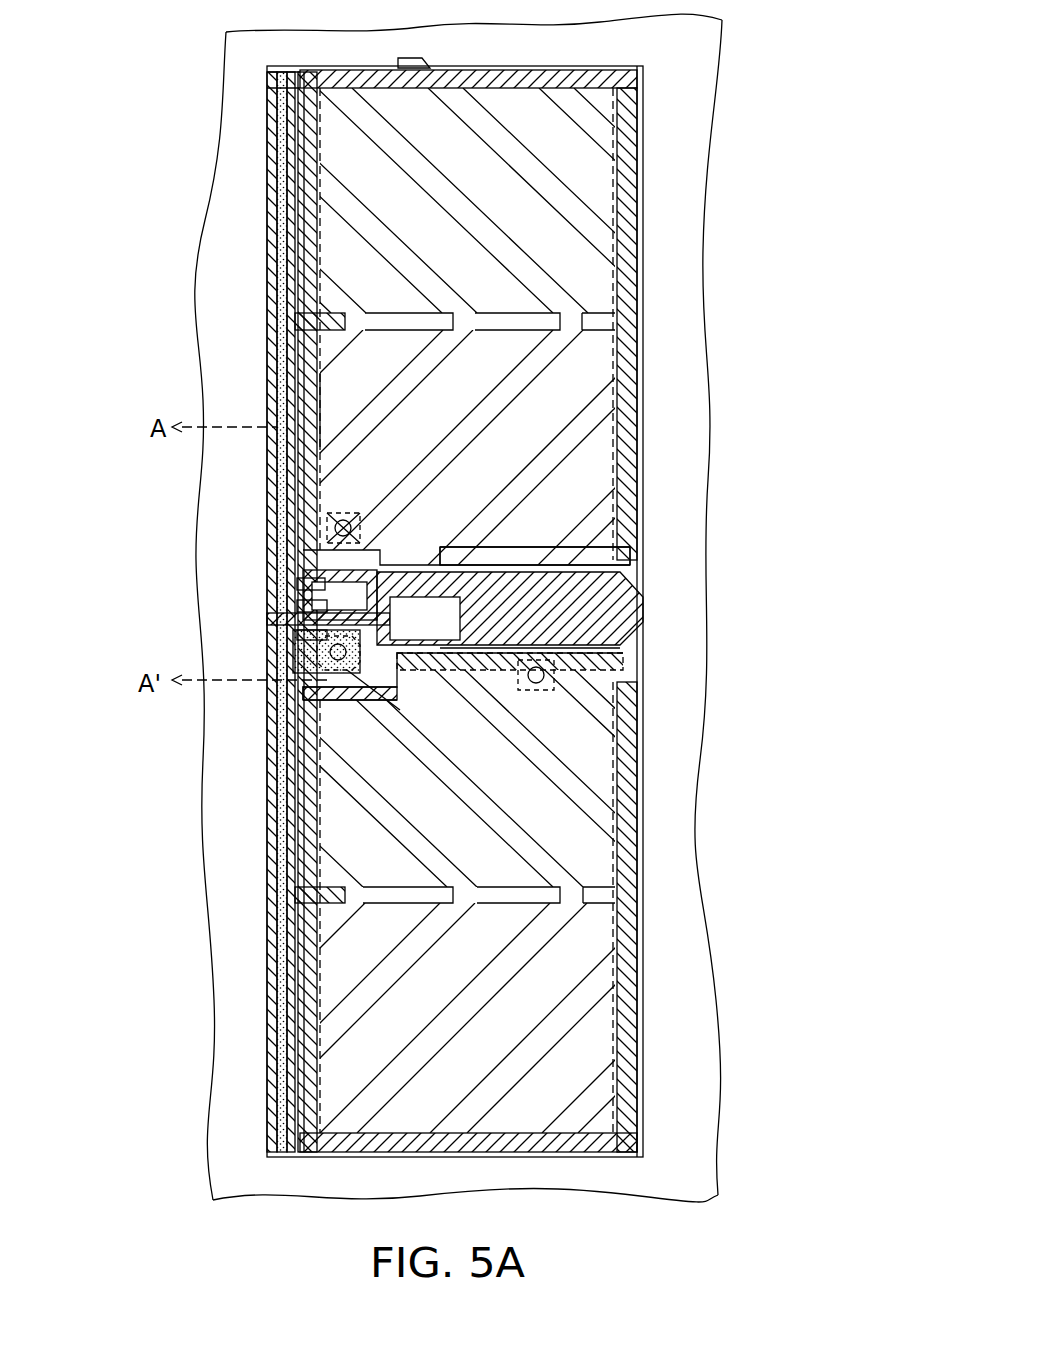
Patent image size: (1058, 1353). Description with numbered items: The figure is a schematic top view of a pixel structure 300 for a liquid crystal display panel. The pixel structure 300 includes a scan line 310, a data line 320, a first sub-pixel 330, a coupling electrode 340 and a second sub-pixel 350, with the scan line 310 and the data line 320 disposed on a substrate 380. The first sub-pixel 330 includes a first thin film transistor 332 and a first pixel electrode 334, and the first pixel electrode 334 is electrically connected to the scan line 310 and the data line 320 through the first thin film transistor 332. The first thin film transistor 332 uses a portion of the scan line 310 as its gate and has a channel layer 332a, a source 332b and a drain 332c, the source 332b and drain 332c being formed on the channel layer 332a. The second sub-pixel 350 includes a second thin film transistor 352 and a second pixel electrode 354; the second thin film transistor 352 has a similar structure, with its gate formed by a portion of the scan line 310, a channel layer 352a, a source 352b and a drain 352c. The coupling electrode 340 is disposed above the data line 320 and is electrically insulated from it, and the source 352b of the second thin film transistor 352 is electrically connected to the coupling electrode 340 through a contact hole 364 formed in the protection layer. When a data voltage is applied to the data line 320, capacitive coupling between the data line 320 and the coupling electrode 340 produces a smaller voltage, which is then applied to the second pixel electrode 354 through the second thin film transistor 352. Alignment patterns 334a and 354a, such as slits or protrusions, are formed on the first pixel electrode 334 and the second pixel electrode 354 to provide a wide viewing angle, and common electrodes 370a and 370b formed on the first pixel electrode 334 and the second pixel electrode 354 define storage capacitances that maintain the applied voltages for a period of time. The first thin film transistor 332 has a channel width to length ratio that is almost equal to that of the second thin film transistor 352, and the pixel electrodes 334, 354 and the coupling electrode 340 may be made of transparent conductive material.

The pixel structure 300 is at (797, 1223).
The scan line 310 is at (520, 618).
The data line 320 is at (267, 115).
The first sub-pixel 330 is at (464, 367).
The first thin film transistor 332 is at (305, 560).
The channel layer 332a is at (305, 608).
The source 332b is at (305, 637).
The drain 332c is at (305, 590).
The first pixel electrode 334 is at (337, 407).
The alignment pattern 334a is at (597, 118).
The coupling electrode 340 is at (277, 367).
The second sub-pixel 350 is at (498, 824).
The second thin film transistor 352 is at (535, 700).
The channel layer 352a is at (445, 553).
The source 352b is at (470, 593).
The drain 352c is at (520, 624).
The second pixel electrode 354 is at (600, 760).
The alignment pattern 354a is at (600, 810).
The contact hole 364 is at (350, 660).
The common electrode 370a is at (627, 330).
The common electrode 370b is at (640, 1047).
The substrate 380 is at (675, 1135).